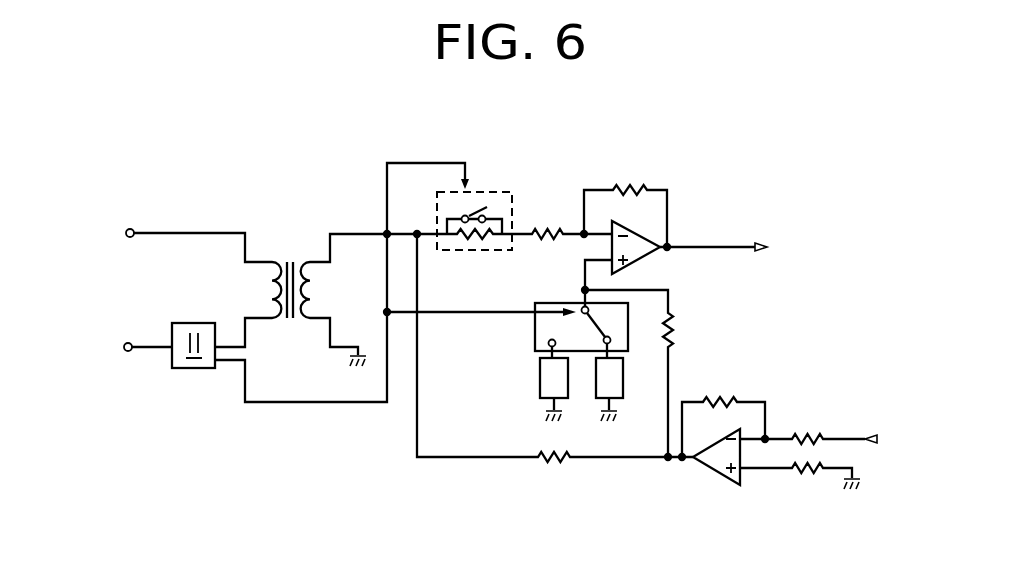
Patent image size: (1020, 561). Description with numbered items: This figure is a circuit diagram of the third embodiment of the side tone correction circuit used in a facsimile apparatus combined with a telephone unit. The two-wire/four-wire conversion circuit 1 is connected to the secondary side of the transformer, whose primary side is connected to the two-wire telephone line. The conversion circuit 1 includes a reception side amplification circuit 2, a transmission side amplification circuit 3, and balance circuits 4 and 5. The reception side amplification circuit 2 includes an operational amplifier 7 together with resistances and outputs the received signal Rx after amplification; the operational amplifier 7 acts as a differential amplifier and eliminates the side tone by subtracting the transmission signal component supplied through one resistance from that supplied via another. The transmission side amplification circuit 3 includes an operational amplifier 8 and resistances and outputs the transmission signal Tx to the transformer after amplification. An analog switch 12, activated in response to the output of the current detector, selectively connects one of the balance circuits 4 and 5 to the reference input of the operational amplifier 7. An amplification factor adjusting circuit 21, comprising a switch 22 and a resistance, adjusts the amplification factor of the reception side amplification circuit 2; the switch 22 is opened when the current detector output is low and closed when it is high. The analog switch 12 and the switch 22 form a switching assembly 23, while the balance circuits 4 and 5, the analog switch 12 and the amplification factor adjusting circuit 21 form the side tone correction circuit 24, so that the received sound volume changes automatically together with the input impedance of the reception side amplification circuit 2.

The two-wire/four-wire conversion circuit 1 is at (501, 295).
The reception side amplification circuit 2 is at (658, 221).
The transmission side amplification circuit 3 is at (794, 430).
The balance circuit 4 is at (547, 387).
The balance circuit 5 is at (617, 387).
The operational amplifier 7 is at (644, 250).
The operational amplifier 8 is at (708, 465).
The analog switch 12 is at (543, 303).
The amplification factor adjusting circuit 21 is at (503, 209).
The switch 22 is at (496, 205).
The switching assembly 23 is at (478, 333).
The side tone correction circuit 24 is at (383, 450).